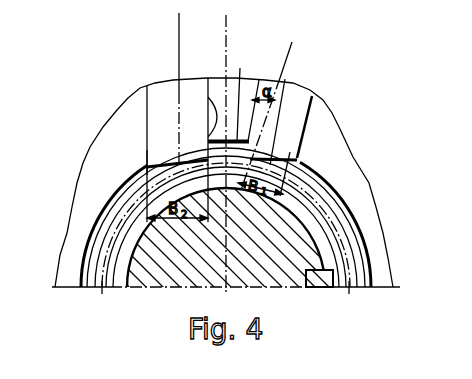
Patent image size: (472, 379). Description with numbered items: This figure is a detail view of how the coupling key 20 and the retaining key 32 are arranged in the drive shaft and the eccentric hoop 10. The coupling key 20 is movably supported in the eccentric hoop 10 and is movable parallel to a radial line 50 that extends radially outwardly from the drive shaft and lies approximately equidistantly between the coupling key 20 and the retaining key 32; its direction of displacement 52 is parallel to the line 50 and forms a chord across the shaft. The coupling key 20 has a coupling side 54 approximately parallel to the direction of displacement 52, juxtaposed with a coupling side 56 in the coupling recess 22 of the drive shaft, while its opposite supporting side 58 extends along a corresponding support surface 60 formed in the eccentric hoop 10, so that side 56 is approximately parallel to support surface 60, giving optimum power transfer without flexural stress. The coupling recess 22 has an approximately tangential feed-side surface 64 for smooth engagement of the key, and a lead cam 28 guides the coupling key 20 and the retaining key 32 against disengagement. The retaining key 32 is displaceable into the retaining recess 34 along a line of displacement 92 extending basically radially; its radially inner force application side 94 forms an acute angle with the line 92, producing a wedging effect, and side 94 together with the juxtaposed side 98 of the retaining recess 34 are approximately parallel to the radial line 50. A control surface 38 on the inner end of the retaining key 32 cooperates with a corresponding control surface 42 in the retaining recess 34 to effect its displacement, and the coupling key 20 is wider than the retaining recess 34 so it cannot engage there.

The eccentric hoop 10 is at (85, 181).
The coupling key 20 is at (147, 87).
The coupling recess 22 is at (100, 217).
The lead cam 28 is at (352, 209).
The retaining key 32 is at (287, 108).
The retaining recess 34 is at (349, 187).
The control surface 38 is at (276, 153).
The control surface 42 is at (320, 174).
The radial line 50 is at (228, 48).
The direction of displacement 52 is at (180, 42).
The coupling side 54 is at (206, 139).
The coupling side 56 is at (208, 97).
The supporting side 58 is at (148, 150).
The support surface 60 is at (147, 143).
The feed-side surface 64 is at (128, 180).
The line of displacement 92 is at (292, 42).
The force application side 94 is at (260, 165).
The side of retaining recess 98 is at (243, 97).